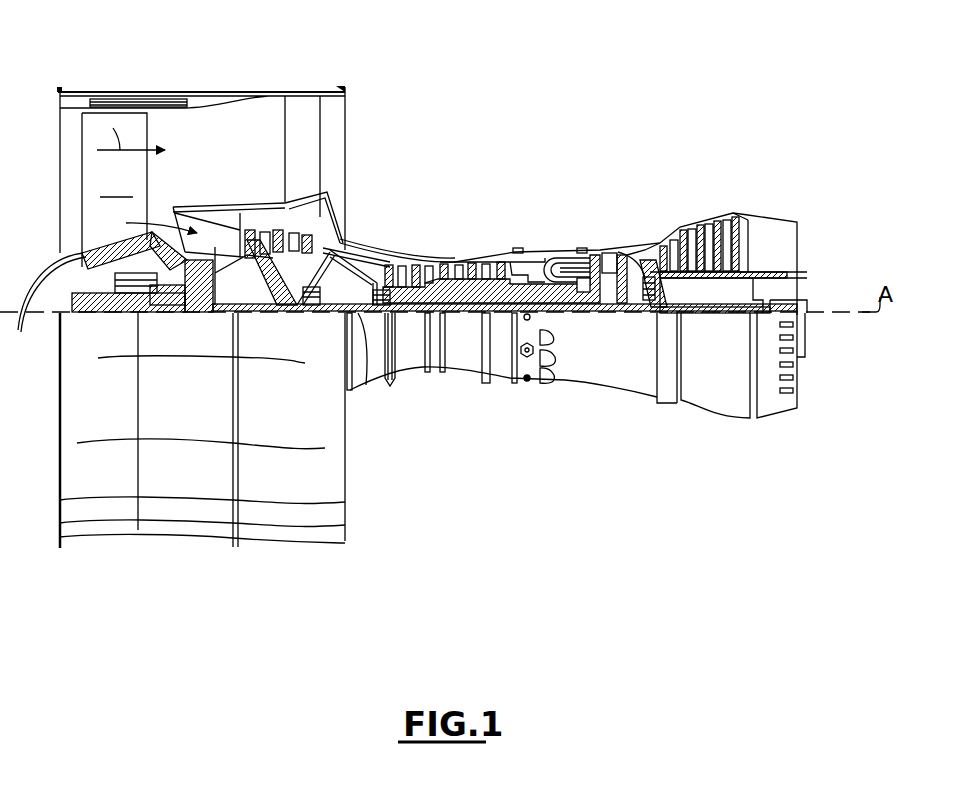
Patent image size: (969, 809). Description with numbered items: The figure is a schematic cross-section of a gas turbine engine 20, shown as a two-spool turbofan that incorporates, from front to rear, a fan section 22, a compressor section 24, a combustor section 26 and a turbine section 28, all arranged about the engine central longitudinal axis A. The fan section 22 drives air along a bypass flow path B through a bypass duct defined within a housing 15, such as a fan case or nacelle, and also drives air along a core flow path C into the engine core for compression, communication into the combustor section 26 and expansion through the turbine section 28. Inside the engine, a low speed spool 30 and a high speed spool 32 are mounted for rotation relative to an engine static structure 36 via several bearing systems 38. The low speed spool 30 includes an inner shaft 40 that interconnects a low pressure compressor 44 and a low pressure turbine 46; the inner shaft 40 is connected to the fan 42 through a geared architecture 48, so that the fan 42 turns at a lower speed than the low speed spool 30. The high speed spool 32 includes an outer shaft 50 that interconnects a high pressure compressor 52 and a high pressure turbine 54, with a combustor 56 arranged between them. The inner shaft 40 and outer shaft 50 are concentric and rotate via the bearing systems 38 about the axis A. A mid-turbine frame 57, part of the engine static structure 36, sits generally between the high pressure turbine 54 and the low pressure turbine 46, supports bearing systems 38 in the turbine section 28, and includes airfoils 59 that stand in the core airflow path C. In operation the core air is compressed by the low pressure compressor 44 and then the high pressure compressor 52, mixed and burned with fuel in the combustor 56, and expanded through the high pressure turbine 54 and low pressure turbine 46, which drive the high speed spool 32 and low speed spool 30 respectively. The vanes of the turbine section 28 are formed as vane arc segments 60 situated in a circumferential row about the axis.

The housing 15 is at (204, 92).
The gas turbine engine 20 is at (566, 127).
The fan section 22 is at (143, 78).
The compressor section 24 is at (388, 235).
The combustor section 26 is at (556, 224).
The turbine section 28 is at (685, 187).
The low speed spool 30 is at (466, 322).
The high speed spool 32 is at (504, 262).
The engine static structure 36 is at (498, 392).
The bearing systems 38 is at (314, 305).
The inner shaft 40 is at (361, 345).
The fan 42 is at (181, 330).
The low pressure compressor 44 is at (283, 247).
The low pressure turbine 46 is at (706, 222).
The geared architecture 48 is at (210, 304).
The outer shaft 50 is at (568, 300).
The high pressure compressor 52 is at (452, 262).
The high pressure turbine 54 is at (606, 250).
The combustor 56 is at (557, 270).
The mid-turbine frame 57 is at (648, 238).
The airfoils 59 is at (660, 278).
The vane arc segment 60 is at (646, 250).